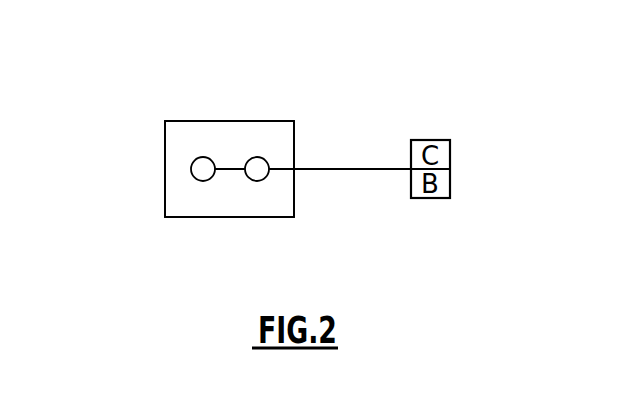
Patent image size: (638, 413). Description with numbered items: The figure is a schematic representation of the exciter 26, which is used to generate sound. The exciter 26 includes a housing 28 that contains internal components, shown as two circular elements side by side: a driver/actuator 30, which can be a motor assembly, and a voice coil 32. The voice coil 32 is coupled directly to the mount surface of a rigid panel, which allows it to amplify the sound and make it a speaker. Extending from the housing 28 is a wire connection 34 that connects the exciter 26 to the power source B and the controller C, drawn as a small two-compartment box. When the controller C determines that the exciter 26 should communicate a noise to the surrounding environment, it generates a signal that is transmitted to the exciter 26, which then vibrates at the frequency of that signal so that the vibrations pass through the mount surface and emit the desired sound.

The exciter 26 is at (135, 108).
The housing 28 is at (238, 121).
The driver/actuator 30 is at (203, 181).
The voice coil 32 is at (257, 181).
The wire connection 34 is at (335, 169).